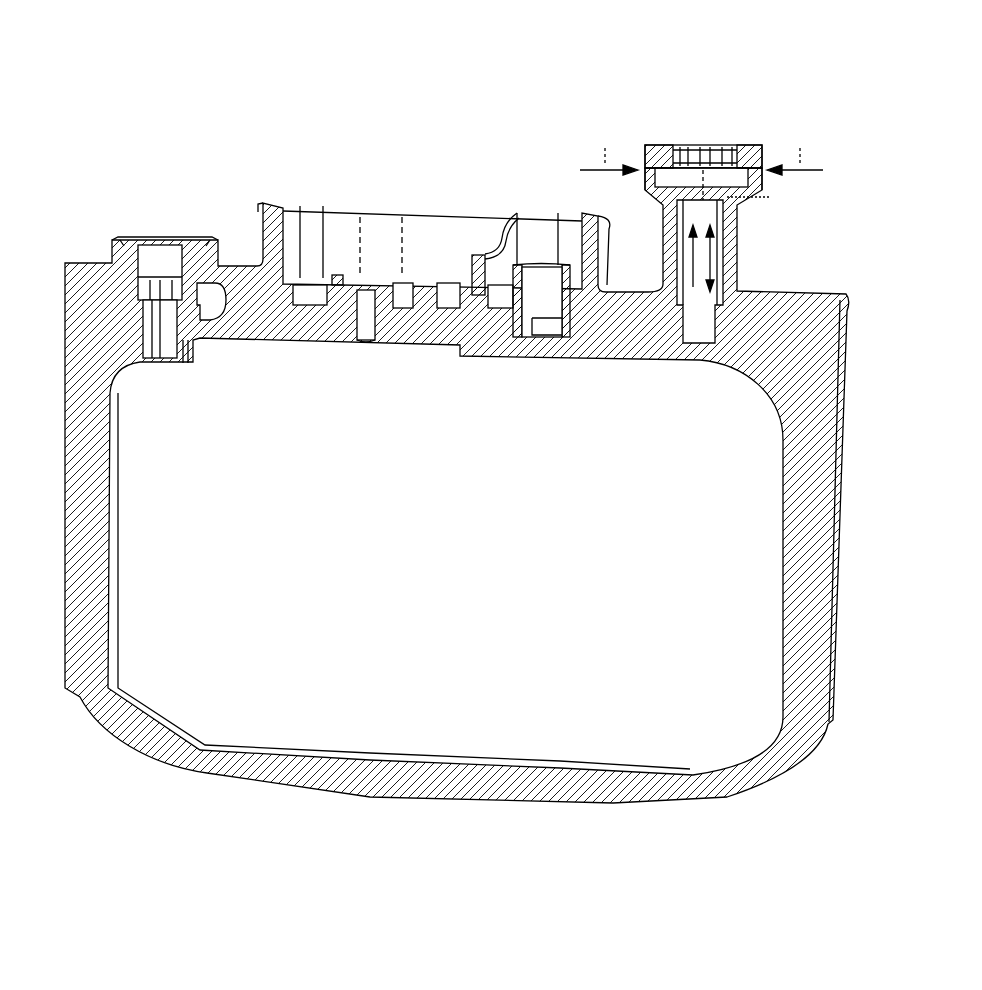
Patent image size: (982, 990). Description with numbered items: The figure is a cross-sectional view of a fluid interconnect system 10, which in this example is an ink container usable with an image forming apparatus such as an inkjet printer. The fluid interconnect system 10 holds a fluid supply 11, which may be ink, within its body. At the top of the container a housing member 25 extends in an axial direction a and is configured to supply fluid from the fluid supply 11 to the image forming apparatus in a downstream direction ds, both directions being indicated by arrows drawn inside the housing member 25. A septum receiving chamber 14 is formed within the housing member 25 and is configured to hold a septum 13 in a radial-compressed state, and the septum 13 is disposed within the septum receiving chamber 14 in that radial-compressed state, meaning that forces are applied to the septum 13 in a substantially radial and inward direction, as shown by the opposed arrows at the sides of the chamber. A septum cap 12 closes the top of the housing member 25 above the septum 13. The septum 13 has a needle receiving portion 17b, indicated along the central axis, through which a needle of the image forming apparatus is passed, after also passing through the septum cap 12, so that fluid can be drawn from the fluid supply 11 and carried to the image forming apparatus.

The fluid interconnect system 10 is at (393, 68).
The fluid supply 11 is at (556, 705).
The septum cap 12 is at (663, 143).
The septum 13 is at (678, 180).
The septum receiving chamber 14 is at (770, 175).
The needle receiving portion 17b is at (706, 165).
The housing member 25 is at (733, 220).
The downstream direction ds is at (700, 262).
The axial direction a is at (704, 262).